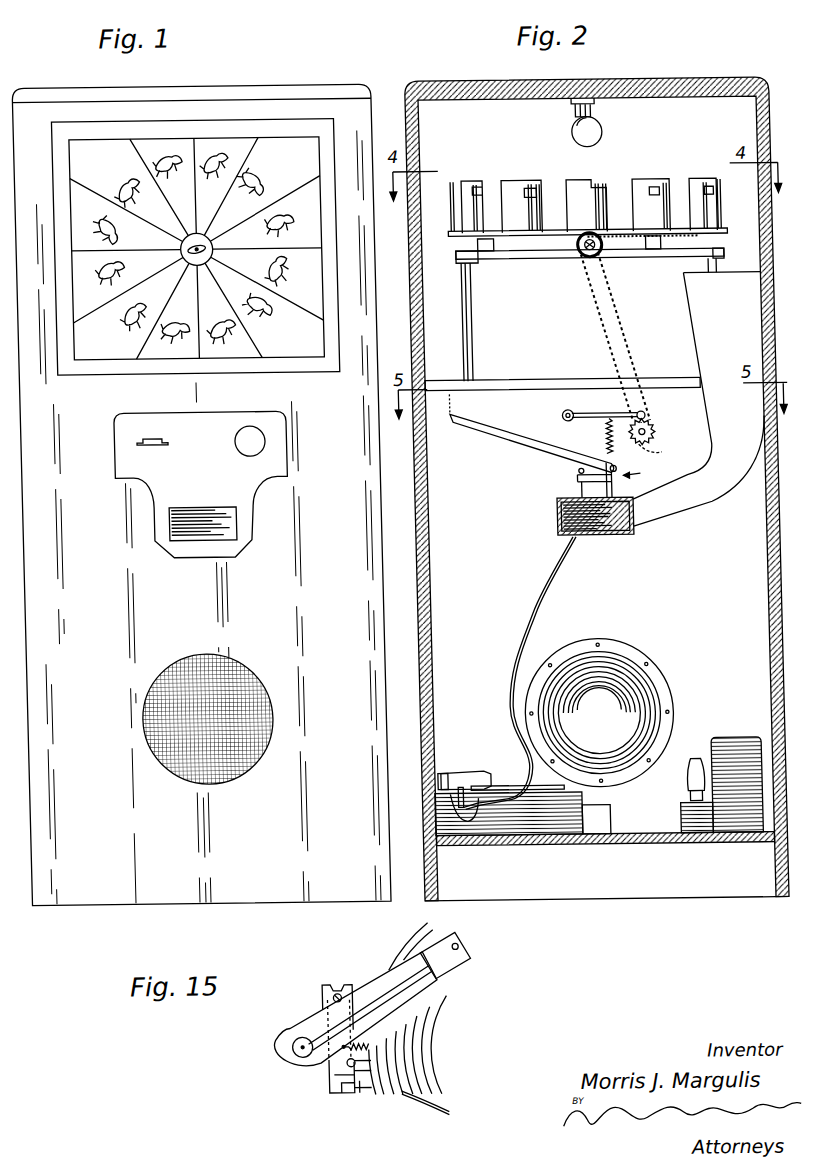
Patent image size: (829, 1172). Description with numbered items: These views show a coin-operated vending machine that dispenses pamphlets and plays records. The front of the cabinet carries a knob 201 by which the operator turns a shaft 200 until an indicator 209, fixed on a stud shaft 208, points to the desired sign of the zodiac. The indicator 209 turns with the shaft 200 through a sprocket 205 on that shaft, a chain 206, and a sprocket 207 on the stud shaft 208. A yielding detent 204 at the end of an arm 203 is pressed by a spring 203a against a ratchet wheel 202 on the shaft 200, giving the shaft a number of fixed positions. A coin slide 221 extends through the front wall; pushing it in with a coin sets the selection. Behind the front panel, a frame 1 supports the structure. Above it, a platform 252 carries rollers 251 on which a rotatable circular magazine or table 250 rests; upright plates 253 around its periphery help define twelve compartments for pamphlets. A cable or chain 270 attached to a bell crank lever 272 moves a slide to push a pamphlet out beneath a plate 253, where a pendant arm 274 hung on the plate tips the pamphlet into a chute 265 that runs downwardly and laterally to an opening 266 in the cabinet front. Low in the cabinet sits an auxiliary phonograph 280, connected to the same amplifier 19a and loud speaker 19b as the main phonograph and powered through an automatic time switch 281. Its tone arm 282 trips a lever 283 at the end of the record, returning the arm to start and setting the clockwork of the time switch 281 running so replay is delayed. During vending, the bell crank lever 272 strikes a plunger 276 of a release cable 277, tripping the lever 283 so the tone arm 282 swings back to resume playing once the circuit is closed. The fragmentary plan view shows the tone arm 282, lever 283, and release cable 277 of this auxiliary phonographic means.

In FIG. 2, the frame 1 is at (636, 473).
In FIG. 2, the amplifier 19a is at (731, 746).
In FIG. 1, the loud speaker 19b is at (210, 783).
In FIG. 2, the loud speaker 19b is at (654, 683).
In FIG. 2, the shaft 200 is at (659, 436).
In FIG. 1, the knob 201 is at (247, 430).
In FIG. 2, the ratchet wheel 202 is at (652, 430).
In FIG. 2, the arm 203 is at (588, 415).
In FIG. 2, the spring 203a is at (588, 436).
In FIG. 2, the yielding detent 204 is at (647, 416).
In FIG. 2, the sprocket 205 is at (666, 453).
In FIG. 2, the chain 206 is at (634, 343).
In FIG. 2, the sprocket 207 is at (598, 254).
In FIG. 1, the stud shaft 208 is at (218, 248).
In FIG. 2, the stud shaft 208 is at (587, 262).
In FIG. 1, the indicator 209 is at (187, 252).
In FIG. 1, the coin slide 221 is at (157, 434).
In FIG. 2, the rotatable circular magazine or table 250 is at (599, 188).
In FIG. 2, the rollers 251 is at (491, 254).
In FIG. 2, the platform 252 is at (544, 257).
In FIG. 2, the upright plates 253 is at (533, 189).
In FIG. 2, the chute 265 is at (707, 311).
In FIG. 1, the opening 266 is at (197, 510).
In FIG. 2, the opening 266 is at (615, 524).
In FIG. 2, the cable or chain 270 is at (453, 404).
In FIG. 2, the bell crank lever 272 is at (484, 434).
In FIG. 2, the pendant arm 274 is at (486, 209).
In FIG. 2, the plunger 276 is at (581, 469).
In FIG. 2, the release cable 277 is at (545, 580).
In FIG. 15, the release cable 277 is at (393, 1101).
In FIG. 2, the auxiliary phonograph 280 is at (572, 827).
In FIG. 2, the automatic time switch 281 is at (592, 826).
In FIG. 2, the tone arm 282 is at (460, 776).
In FIG. 15, the tone arm 282 is at (358, 1004).
In FIG. 2, the lever 283 is at (457, 818).
In FIG. 15, the lever 283 is at (326, 1081).